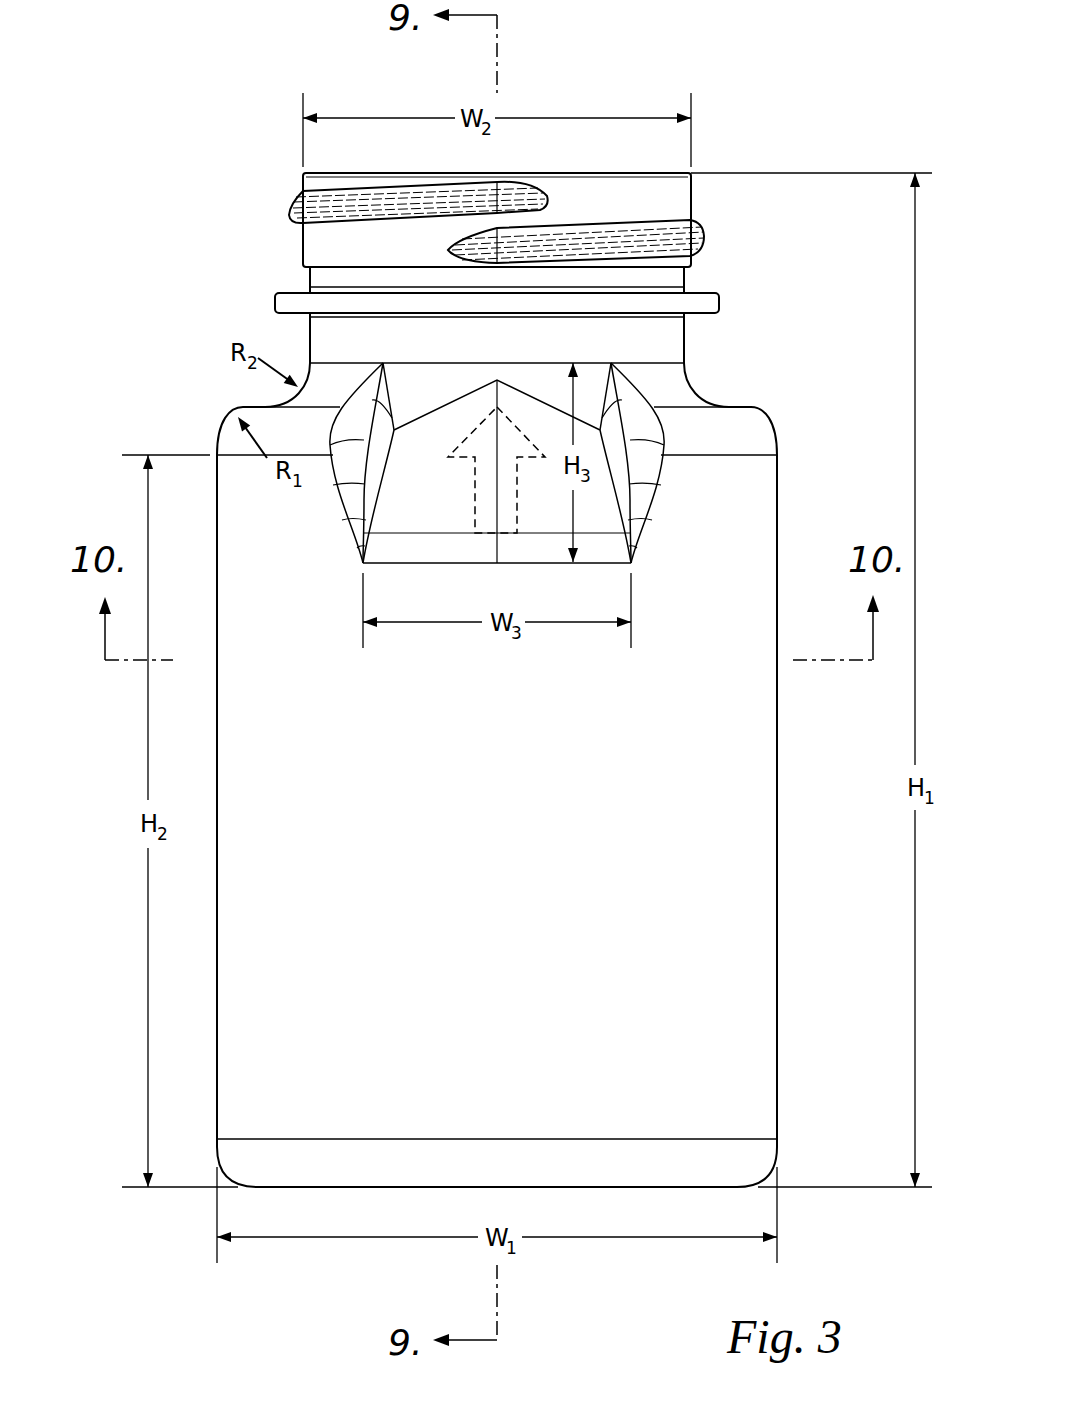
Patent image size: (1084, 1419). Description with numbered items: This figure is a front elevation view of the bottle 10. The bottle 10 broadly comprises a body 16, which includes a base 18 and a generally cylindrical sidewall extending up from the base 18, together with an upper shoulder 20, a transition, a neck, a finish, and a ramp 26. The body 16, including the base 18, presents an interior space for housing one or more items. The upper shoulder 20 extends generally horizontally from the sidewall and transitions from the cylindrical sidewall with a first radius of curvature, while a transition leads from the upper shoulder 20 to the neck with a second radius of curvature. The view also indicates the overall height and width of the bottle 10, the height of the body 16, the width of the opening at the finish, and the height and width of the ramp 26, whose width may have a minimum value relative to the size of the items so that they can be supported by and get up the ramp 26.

The bottle 10 is at (203, 263).
The body 16 is at (743, 802).
The base 18 is at (750, 1157).
The upper shoulder 20 is at (757, 432).
The ramp 26 is at (403, 507).